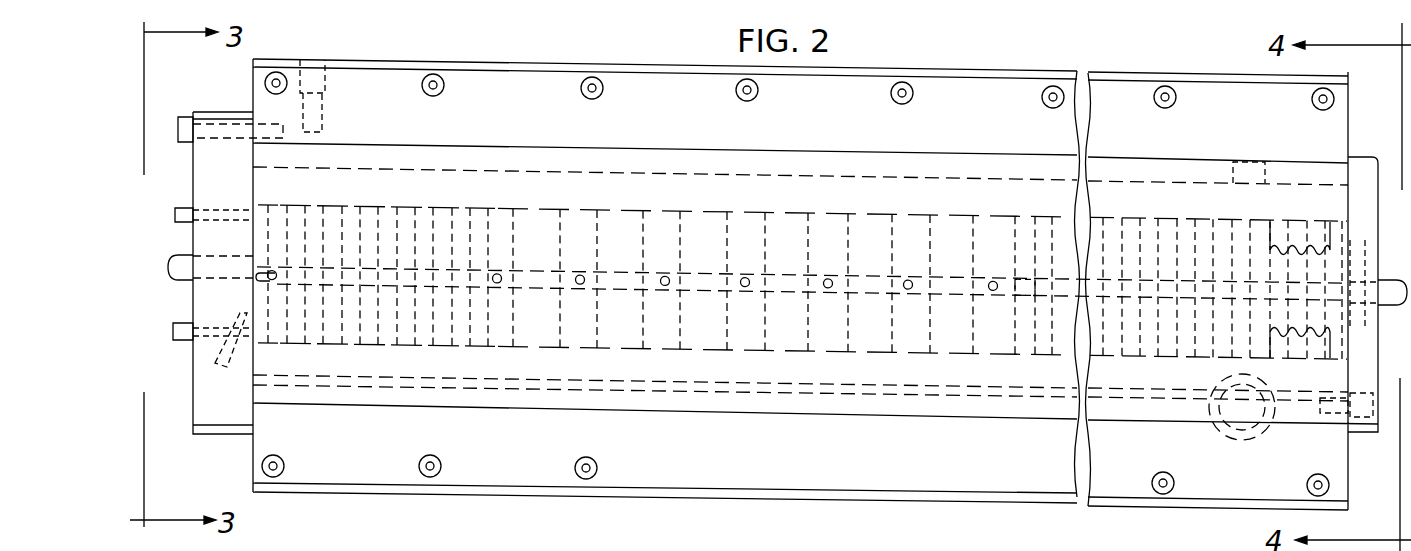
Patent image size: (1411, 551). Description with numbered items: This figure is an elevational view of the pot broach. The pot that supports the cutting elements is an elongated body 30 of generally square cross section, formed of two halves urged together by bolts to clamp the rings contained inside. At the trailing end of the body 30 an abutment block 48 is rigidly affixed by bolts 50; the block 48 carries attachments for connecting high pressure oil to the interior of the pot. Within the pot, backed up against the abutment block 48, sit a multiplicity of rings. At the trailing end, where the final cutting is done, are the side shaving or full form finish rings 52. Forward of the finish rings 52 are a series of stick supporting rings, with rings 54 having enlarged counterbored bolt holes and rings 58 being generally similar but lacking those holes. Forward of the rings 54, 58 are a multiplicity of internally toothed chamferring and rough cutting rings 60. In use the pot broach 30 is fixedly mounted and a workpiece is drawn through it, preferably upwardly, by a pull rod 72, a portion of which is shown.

The elongated body 30 is at (478, 62).
The abutment block 48 is at (193, 180).
The bolts 50 is at (178, 118).
The finish rings 52 is at (388, 210).
The stick supporting rings 54 is at (490, 228).
The stick supporting rings 58 is at (614, 222).
The chamferring and rough cutting rings 60 is at (1148, 227).
The pull rod 72 is at (176, 256).